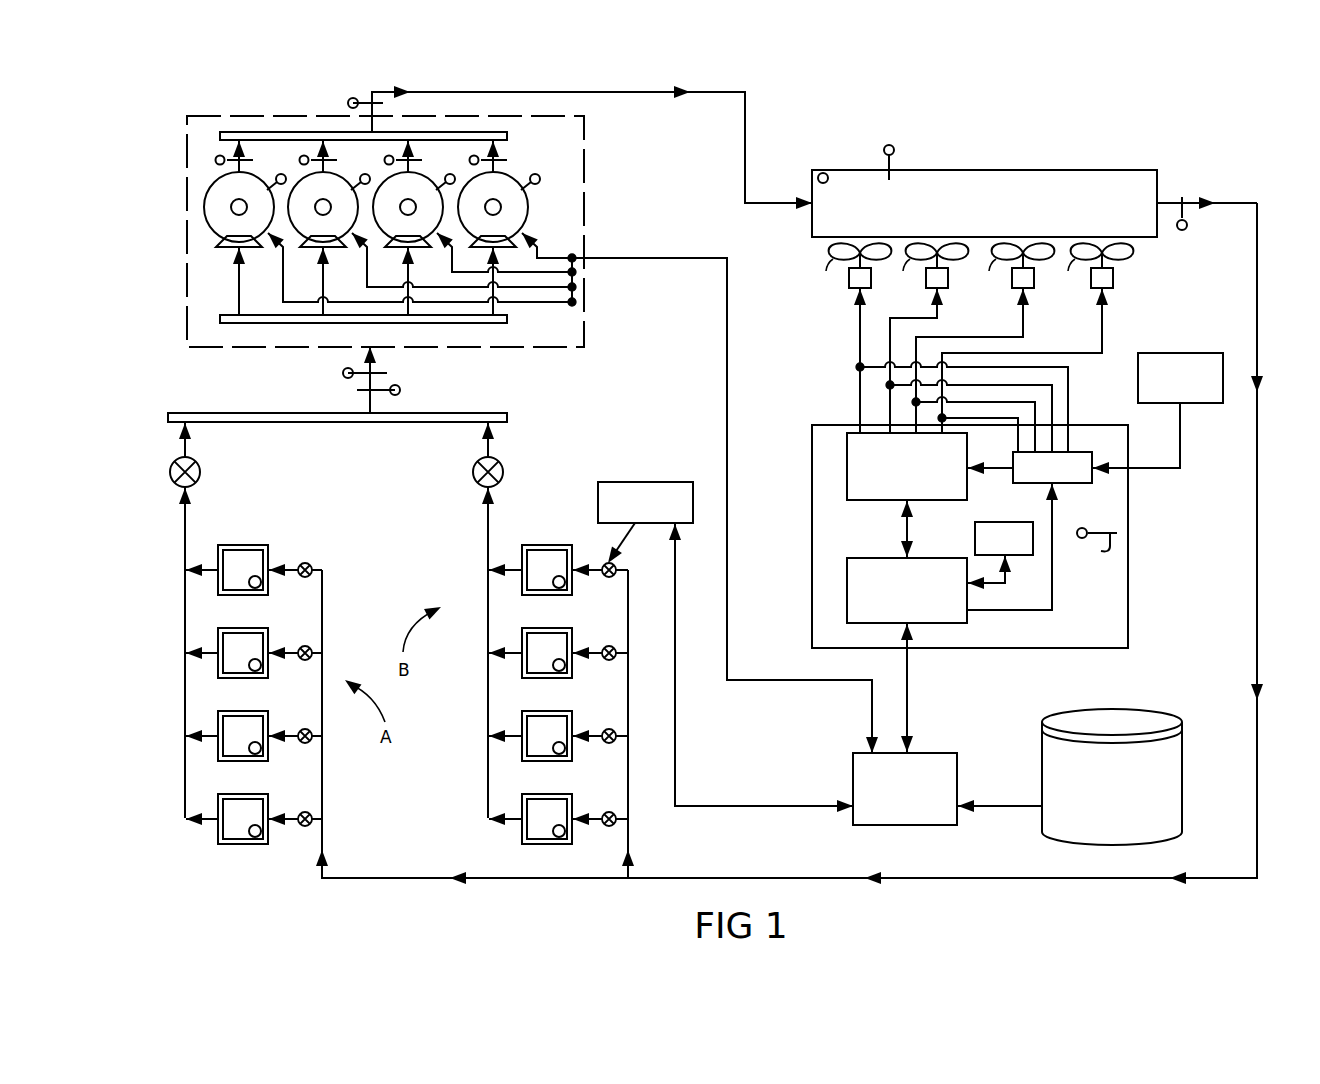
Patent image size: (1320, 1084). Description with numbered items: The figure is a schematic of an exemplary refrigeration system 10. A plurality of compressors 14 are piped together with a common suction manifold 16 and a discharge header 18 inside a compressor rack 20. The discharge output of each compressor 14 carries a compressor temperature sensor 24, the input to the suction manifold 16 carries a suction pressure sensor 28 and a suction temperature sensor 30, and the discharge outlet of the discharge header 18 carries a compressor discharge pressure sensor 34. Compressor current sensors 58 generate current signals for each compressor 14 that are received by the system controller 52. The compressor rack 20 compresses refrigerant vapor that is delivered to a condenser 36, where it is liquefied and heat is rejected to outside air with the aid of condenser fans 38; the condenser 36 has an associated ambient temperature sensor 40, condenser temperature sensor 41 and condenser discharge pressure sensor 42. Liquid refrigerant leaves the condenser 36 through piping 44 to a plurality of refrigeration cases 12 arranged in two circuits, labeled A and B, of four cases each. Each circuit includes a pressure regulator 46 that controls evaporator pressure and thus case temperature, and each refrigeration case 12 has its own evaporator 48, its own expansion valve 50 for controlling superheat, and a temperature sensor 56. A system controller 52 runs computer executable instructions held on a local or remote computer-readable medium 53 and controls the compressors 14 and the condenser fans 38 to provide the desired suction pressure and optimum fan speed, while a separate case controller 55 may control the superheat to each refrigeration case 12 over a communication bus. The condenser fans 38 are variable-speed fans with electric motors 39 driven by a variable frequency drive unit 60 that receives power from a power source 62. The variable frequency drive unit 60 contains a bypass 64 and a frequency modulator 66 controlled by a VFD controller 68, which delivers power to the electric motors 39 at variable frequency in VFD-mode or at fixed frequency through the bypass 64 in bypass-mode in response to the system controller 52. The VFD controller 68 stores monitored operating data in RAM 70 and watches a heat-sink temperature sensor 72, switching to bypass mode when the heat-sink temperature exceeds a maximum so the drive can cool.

The refrigeration system 10 is at (1178, 113).
The refrigeration case 12 is at (243, 545).
The compressor 14 is at (528, 214).
The suction manifold 16 is at (243, 323).
The discharge header 18 is at (243, 132).
The compressor rack 20 is at (584, 222).
The compressor temperature sensor 24 is at (472, 162).
The suction pressure sensor 28 is at (343, 373).
The suction temperature sensor 30 is at (400, 388).
The compressor discharge pressure sensor 34 is at (348, 103).
The condenser 36 is at (1090, 170).
The condenser fan 38 is at (972, 271).
The electric motor 39 is at (871, 281).
The ambient temperature sensor 40 is at (895, 151).
The condenser temperature sensor 41 is at (828, 177).
The condenser discharge pressure sensor 42 is at (1187, 228).
The piping 44 is at (1256, 570).
The pressure regulator 46 is at (200, 470).
The evaporator 48 is at (218, 578).
The expansion valve 50 is at (302, 578).
The system controller 52 is at (957, 770).
The computer-readable medium 53 is at (1182, 745).
The case controller 55 is at (680, 482).
The temperature sensor 56 is at (252, 588).
The compressor current sensor 58 is at (541, 178).
The variable frequency drive unit 60 is at (1128, 630).
The power source 62 is at (1150, 353).
The bypass 64 is at (1072, 483).
The frequency modulator 66 is at (870, 500).
The VFD controller 68 is at (873, 558).
The RAM 70 is at (1012, 522).
The heat-sink temperature sensor 72 is at (1095, 547).